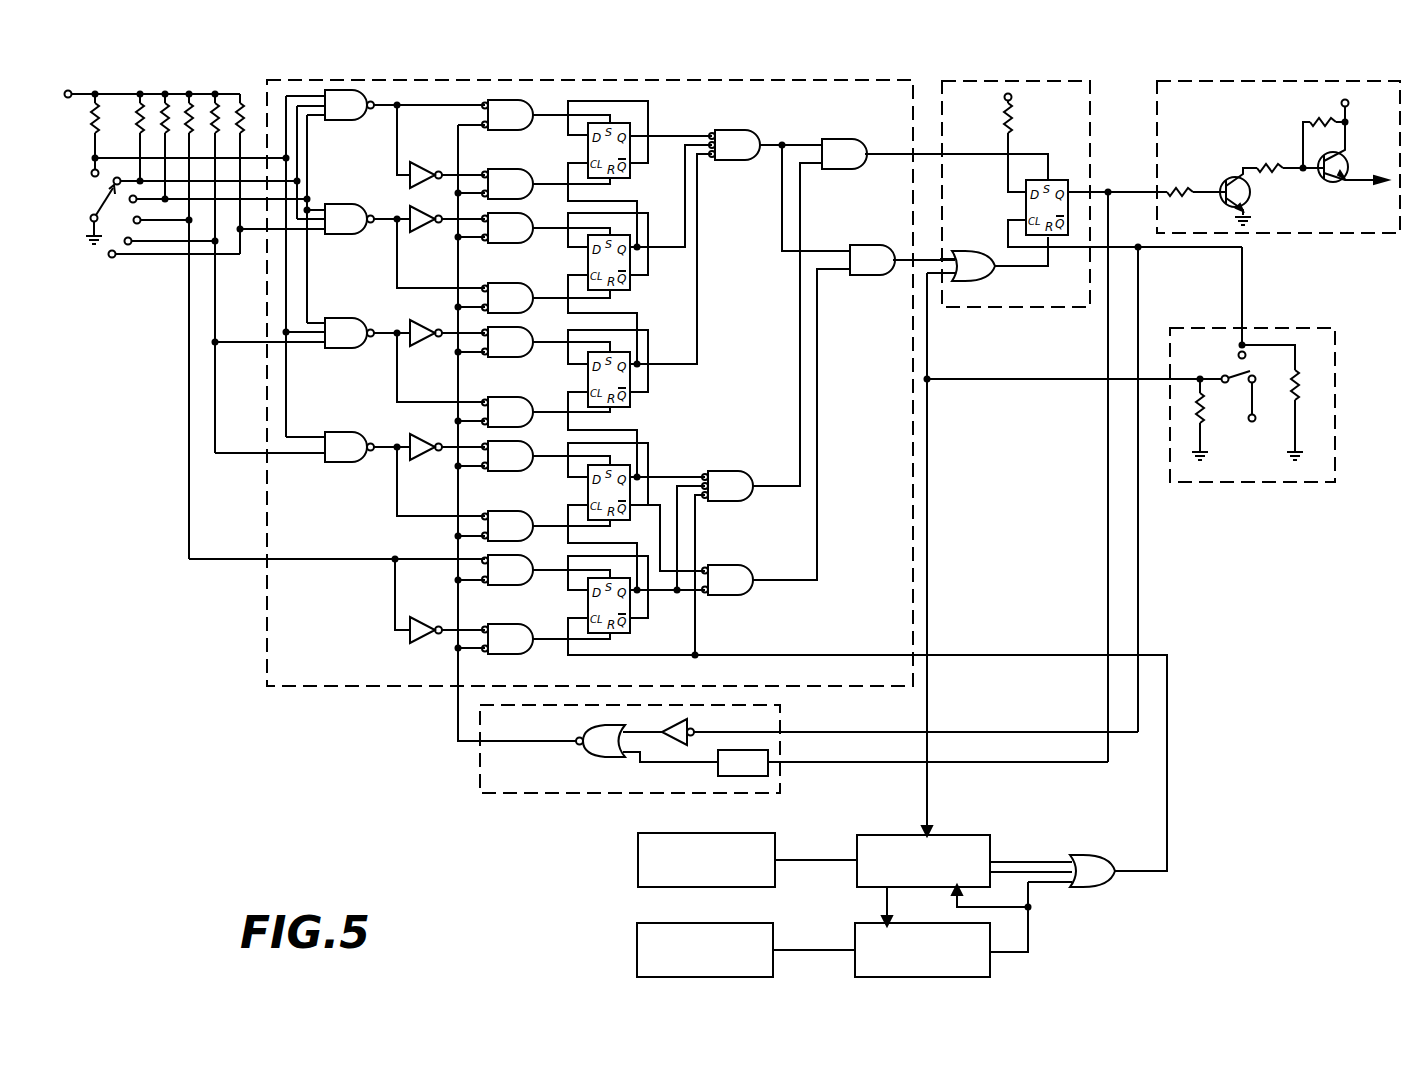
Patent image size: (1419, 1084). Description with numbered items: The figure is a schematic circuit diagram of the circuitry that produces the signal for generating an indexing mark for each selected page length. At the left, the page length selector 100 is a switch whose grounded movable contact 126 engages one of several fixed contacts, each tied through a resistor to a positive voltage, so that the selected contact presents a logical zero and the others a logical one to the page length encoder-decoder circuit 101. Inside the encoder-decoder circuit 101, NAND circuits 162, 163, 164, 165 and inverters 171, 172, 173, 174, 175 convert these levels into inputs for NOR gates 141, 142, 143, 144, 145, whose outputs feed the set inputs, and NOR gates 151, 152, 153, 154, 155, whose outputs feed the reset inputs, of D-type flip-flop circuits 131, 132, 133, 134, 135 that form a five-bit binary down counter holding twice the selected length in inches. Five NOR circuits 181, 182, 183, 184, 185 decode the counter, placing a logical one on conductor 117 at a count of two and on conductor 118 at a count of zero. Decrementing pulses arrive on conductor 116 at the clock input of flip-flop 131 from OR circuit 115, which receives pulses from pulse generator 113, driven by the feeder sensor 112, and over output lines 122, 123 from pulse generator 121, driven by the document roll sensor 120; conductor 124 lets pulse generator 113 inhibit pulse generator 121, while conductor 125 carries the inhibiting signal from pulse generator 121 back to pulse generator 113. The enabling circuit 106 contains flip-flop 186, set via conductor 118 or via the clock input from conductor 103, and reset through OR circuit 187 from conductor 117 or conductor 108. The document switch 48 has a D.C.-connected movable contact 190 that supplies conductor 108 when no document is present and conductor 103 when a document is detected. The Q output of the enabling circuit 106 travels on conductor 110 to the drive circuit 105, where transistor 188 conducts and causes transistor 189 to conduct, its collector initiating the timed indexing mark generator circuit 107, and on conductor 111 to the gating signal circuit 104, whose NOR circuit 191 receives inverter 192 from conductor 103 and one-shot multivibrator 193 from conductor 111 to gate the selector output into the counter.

The page length selector 100 is at (80, 223).
The movable contact 126 is at (99, 201).
The page length encoder-decoder circuit 101 is at (267, 626).
The gating signal circuit 104 is at (497, 793).
The drive circuit 105 is at (1335, 234).
The enabling circuit 106 is at (1090, 113).
The document switch 48 is at (1337, 357).
The NAND circuit 165 is at (353, 121).
The NAND circuit 164 is at (353, 235).
The NAND circuit 163 is at (353, 349).
The NAND circuit 162 is at (353, 463).
The inverter 175 is at (424, 184).
The inverter 174 is at (426, 230).
The inverter 173 is at (426, 344).
The inverter 172 is at (426, 458).
The inverter 171 is at (426, 641).
The NOR gate 145 is at (523, 133).
The NOR gate 155 is at (522, 157).
The NOR gate 144 is at (523, 245).
The NOR gate 154 is at (522, 271).
The NOR gate 143 is at (522, 360).
The NOR gate 153 is at (522, 385).
The NOR gate 142 is at (520, 474).
The NOR gate 152 is at (520, 499).
The NOR gate 141 is at (512, 587).
The NOR gate 151 is at (512, 656).
The D-type flip-flop circuit 135 is at (630, 178).
The D-type flip-flop circuit 134 is at (630, 290).
The D-type flip-flop circuit 133 is at (630, 407).
The D-type flip-flop circuit 132 is at (628, 520).
The D-type flip-flop circuit 131 is at (630, 633).
The NOR circuit 183 is at (740, 160).
The NOR circuit 185 is at (848, 169).
The NOR circuit 184 is at (870, 275).
The NOR circuit 182 is at (742, 501).
The NOR circuit 181 is at (730, 596).
The OR circuit 187 is at (972, 284).
The D-type flip-flop circuit 186 is at (1060, 178).
The conductor 118 is at (933, 154).
The conductor 117 is at (933, 266).
The conductor 110 is at (1127, 192).
The conductor 111 is at (1106, 531).
The conductor 103 is at (1244, 286).
The conductor 108 is at (1012, 379).
The transistor 188 is at (1232, 176).
The transistor 189 is at (1328, 182).
The timed indexing mark generator circuit 107 is at (1362, 186).
The movable contact 190 is at (1244, 375).
The NOR circuit 191 is at (600, 727).
The inverter 192 is at (697, 727).
The one-shot multivibrator 193 is at (716, 769).
The document roll sensor 120 is at (638, 861).
The feeder sensor 112 is at (637, 952).
The pulse generator 121 is at (977, 833).
The pulse generator 113 is at (990, 968).
The conductor 125 is at (885, 898).
The output line 122 is at (1038, 861).
The output line 123 is at (1015, 874).
The conductor 124 is at (1012, 906).
The OR circuit 115 is at (1100, 857).
The conductor 116 is at (1170, 767).